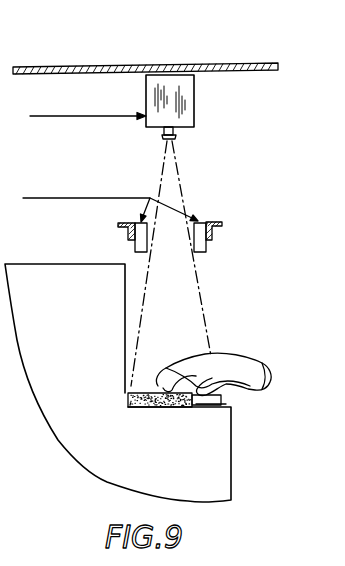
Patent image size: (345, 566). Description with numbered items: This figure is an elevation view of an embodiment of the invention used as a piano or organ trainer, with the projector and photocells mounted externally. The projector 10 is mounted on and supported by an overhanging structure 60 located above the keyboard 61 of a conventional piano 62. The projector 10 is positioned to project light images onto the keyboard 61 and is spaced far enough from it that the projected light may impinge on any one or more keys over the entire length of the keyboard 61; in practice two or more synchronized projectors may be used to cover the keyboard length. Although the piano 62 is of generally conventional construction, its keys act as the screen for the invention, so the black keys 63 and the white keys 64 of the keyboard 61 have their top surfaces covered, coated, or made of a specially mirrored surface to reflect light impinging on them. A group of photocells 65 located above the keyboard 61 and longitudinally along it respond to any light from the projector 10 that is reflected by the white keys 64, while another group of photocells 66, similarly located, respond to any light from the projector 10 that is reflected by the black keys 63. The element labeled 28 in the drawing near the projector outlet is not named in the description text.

The overhanging structure 60 is at (105, 66).
The projector 10 is at (195, 90).
The projection lens 28 is at (175, 137).
The photocells 66 is at (134, 243).
The photocells 65 is at (207, 245).
The piano 62 is at (41, 264).
The black keys 63 is at (165, 409).
The white keys 64 is at (221, 399).
The keyboard 61 is at (203, 406).